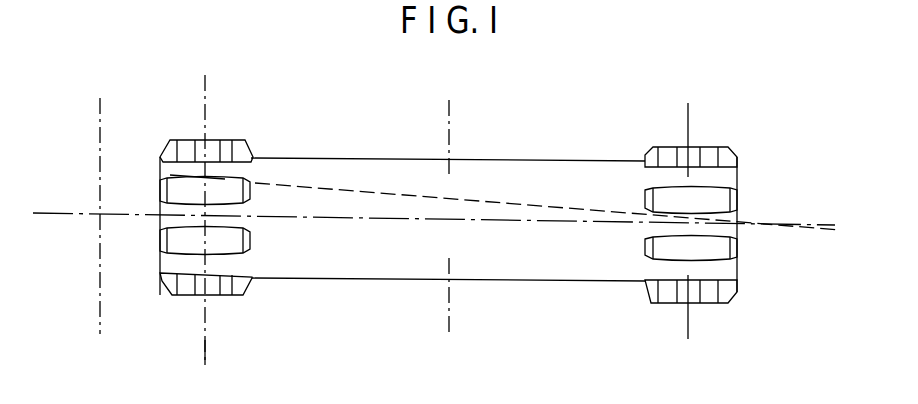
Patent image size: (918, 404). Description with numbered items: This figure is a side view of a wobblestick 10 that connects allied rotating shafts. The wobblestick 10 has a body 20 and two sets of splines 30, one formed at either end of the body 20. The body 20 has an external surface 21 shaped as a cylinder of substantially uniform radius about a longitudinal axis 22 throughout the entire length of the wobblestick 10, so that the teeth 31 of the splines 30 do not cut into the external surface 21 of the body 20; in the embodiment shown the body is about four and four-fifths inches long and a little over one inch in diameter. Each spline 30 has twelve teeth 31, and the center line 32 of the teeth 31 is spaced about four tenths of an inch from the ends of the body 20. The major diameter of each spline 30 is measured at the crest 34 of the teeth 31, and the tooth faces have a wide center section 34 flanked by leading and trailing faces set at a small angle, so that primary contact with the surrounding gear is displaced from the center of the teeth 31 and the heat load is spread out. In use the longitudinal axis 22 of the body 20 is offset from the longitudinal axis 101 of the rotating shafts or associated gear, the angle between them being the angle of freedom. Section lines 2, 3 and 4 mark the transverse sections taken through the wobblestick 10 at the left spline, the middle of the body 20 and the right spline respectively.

The wobblestick 10 is at (540, 158).
The body 20 is at (353, 170).
The external surface 21 is at (568, 260).
The longitudinal axis 22 is at (793, 228).
The splines 30 is at (653, 160).
The teeth 31 is at (241, 287).
The center line 32 is at (208, 352).
The crest / center section 34 is at (213, 147).
The longitudinal axis of the rotating shafts 101 is at (276, 183).
The section line 2- 2 is at (138, 330).
The section line 3- 3 is at (448, 218).
The section line 4- 4 is at (728, 337).